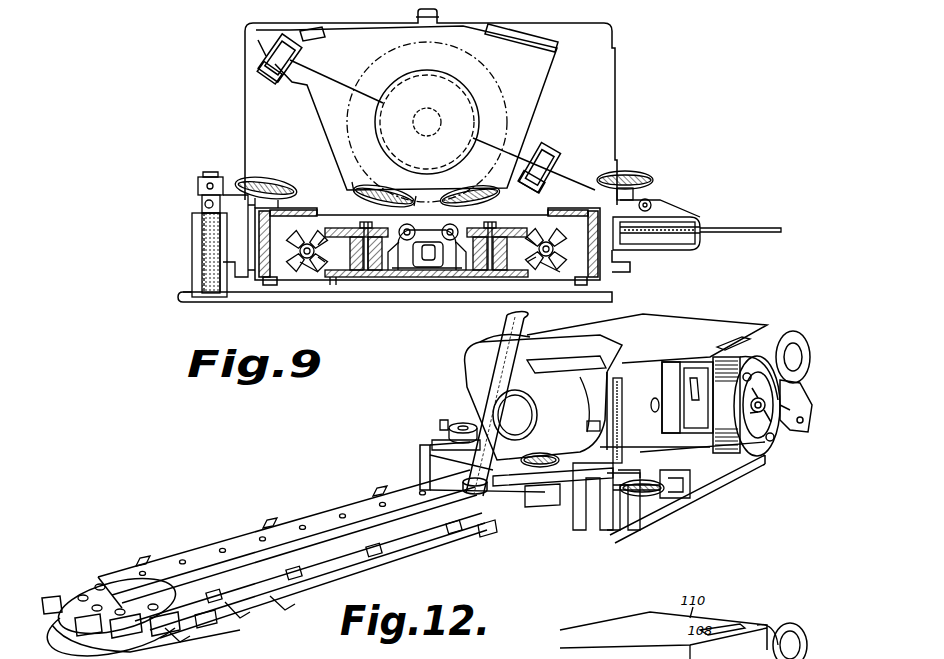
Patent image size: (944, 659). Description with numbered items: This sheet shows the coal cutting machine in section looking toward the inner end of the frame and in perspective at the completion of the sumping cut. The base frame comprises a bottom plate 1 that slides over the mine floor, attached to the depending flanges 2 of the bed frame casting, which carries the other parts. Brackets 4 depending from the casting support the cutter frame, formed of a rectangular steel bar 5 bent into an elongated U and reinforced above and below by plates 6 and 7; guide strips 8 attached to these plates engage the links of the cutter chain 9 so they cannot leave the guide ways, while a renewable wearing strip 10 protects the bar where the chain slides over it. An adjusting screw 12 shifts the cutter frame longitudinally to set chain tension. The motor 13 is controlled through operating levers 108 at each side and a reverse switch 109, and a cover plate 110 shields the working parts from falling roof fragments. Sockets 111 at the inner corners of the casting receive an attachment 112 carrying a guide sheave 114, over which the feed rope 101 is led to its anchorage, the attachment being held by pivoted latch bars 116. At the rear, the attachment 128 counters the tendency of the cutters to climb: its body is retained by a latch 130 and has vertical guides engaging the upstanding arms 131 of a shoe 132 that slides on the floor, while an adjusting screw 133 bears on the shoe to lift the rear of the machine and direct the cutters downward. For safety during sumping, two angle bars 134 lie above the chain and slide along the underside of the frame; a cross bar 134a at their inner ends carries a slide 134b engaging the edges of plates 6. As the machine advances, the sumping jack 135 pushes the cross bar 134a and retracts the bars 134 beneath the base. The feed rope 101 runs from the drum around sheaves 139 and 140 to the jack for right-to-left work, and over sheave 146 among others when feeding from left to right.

In FIG. 9, the bottom plate 1 is at (352, 286).
In FIG. 12, the bottom plate 1 is at (712, 488).
In FIG. 9, the depending flanges 2 is at (246, 303).
In FIG. 12, the depending flanges 2 is at (725, 467).
In FIG. 9, the brackets 4 is at (403, 270).
In FIG. 9, the steel bar 5 is at (372, 278).
In FIG. 12, the steel bar 5 is at (262, 556).
In FIG. 9, the plates 6 is at (346, 214).
In FIG. 12, the plates 6 is at (203, 556).
In FIG. 9, the plates 7 is at (332, 284).
In FIG. 12, the plates 7 is at (300, 610).
In FIG. 9, the guide strips 8 is at (427, 256).
In FIG. 12, the guide strips 8 is at (246, 600).
In FIG. 9, the cutter chain 9 is at (308, 264).
In FIG. 9, the wearing strip 10 is at (516, 262).
In FIG. 9, the adjusting screw 12 is at (428, 262).
In FIG. 9, the motor 13 is at (431, 107).
In FIG. 12, the motor 13 is at (646, 393).
In FIG. 9, the feed rope 101 is at (735, 227).
In FIG. 12, the feed rope 101 is at (703, 448).
In FIG. 12, the operating levers 108 is at (735, 341).
In FIG. 12, the reverse switch 109 is at (701, 405).
In FIG. 12, the cover plate 110 is at (675, 322).
In FIG. 9, the sockets 111 is at (232, 260).
In FIG. 12, the sockets 111 is at (435, 440).
In FIG. 9, the attachment 112 is at (700, 250).
In FIG. 12, the attachment 112 is at (675, 498).
In FIG. 9, the guide sheave 114 is at (686, 222).
In FIG. 12, the guide sheave 114 is at (640, 492).
In FIG. 9, the pivoted latch bars 116 is at (648, 200).
In FIG. 9, the attachment 128 is at (196, 270).
In FIG. 9, the latch 130 is at (200, 202).
In FIG. 9, the upstanding arms 131 is at (196, 233).
In FIG. 9, the shoe 132 is at (205, 298).
In FIG. 9, the adjusting screw 133 is at (212, 174).
In FIG. 12, the adjusting screw 133 is at (440, 428).
In FIG. 12, the angle bars 134 is at (440, 456).
In FIG. 12, the cross bar 134a is at (540, 507).
In FIG. 12, the slide 134b is at (486, 537).
In FIG. 12, the sumping jack 135 is at (505, 385).
In FIG. 9, the sheave 139 is at (629, 172).
In FIG. 12, the sheave 139 is at (626, 448).
In FIG. 9, the sheave 140 is at (474, 190).
In FIG. 12, the sheave 140 is at (543, 453).
In FIG. 9, the sheave 146 is at (386, 192).